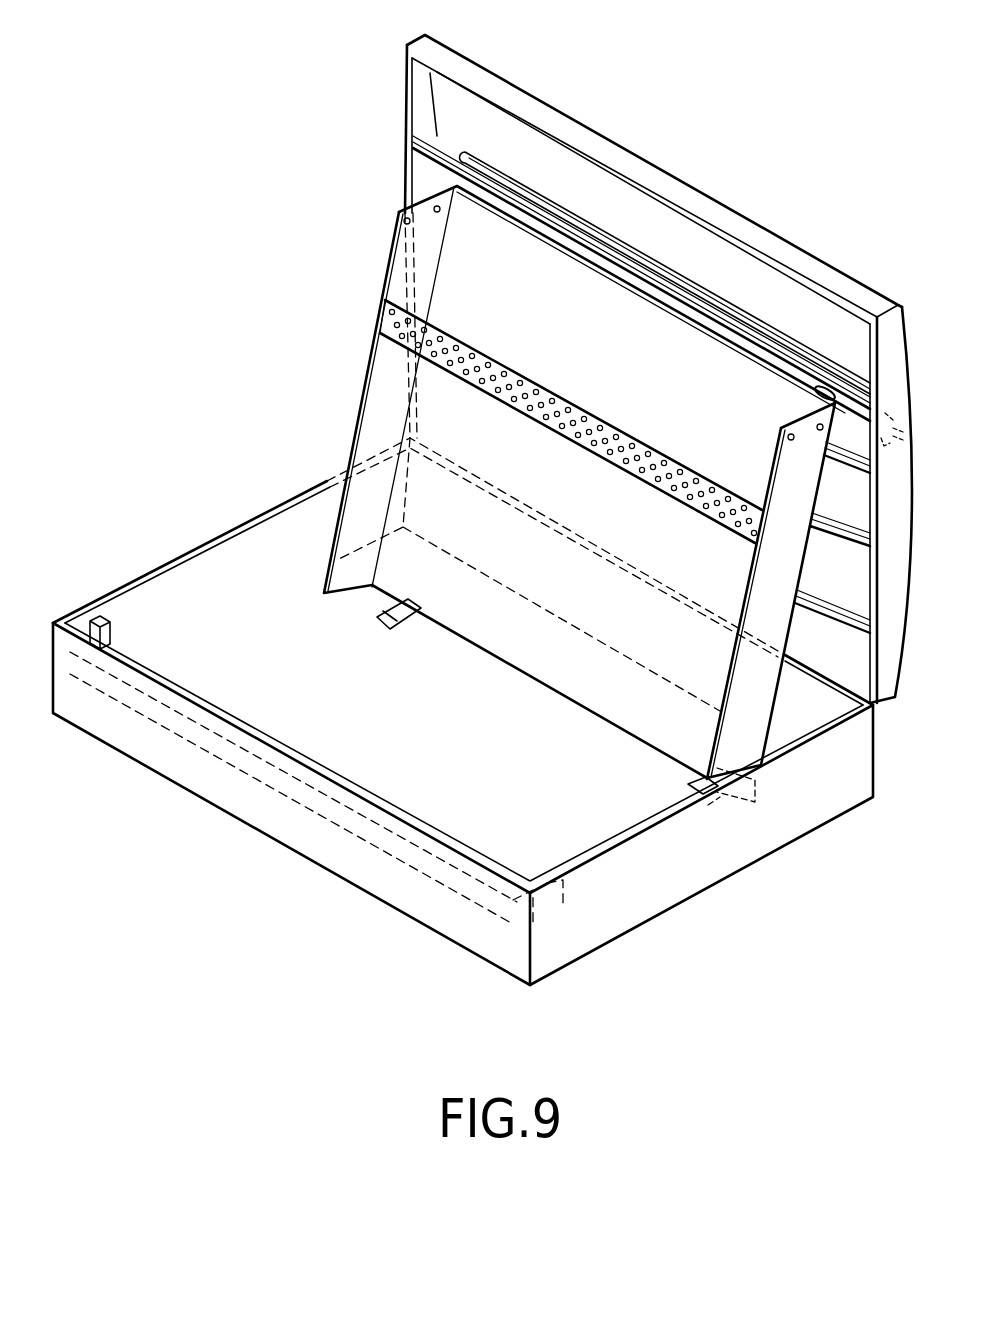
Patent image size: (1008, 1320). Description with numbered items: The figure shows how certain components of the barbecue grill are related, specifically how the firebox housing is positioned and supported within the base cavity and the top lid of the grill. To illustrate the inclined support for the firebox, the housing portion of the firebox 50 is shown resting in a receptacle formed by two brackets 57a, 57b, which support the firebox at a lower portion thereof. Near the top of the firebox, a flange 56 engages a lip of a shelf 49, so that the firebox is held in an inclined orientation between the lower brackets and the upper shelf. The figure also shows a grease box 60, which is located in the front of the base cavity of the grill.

The shelf 49 is at (430, 152).
The flange 56 is at (542, 222).
The grease box 60 is at (143, 648).
The firebox 50 is at (332, 596).
The bracket 57a is at (405, 628).
The bracket 57b is at (692, 787).